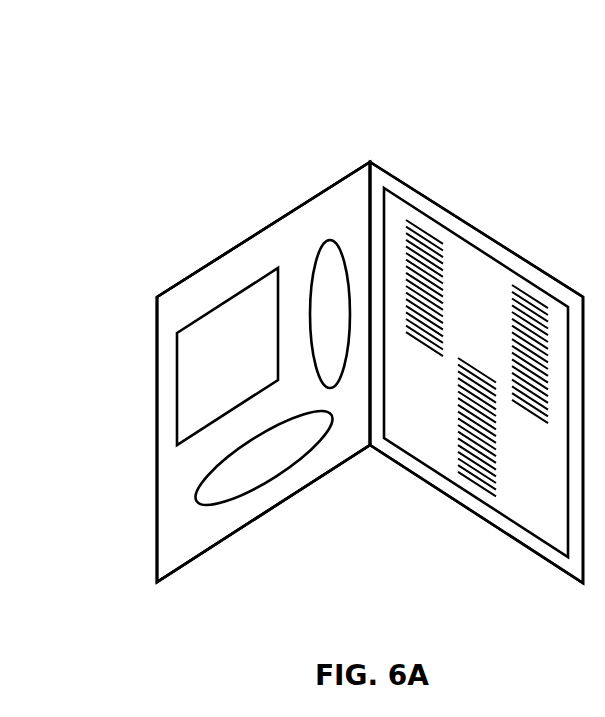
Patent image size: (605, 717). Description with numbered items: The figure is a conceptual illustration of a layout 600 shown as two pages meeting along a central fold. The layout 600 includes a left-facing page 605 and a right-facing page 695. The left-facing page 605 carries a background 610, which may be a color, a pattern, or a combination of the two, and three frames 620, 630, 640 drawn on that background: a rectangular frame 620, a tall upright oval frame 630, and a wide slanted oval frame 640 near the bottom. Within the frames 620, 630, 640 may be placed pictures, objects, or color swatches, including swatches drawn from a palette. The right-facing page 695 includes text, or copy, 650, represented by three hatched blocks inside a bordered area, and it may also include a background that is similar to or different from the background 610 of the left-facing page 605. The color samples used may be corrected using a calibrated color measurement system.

The layout 600 is at (192, 69).
The left-facing page 605 is at (173, 558).
The background 610 is at (208, 283).
The frame 620 is at (176, 393).
The frame 630 is at (330, 243).
The frame 640 is at (272, 482).
The text 650 is at (482, 324).
The right-facing page 695 is at (574, 562).